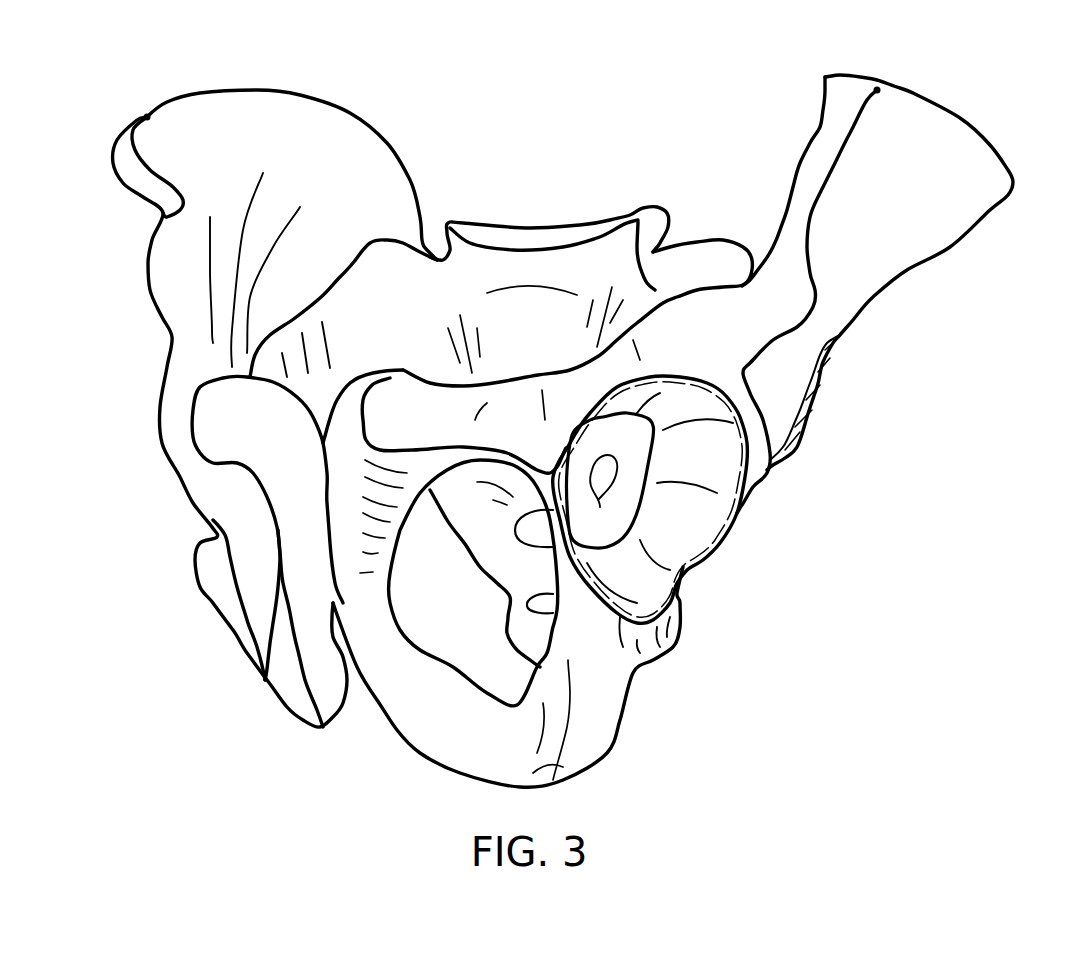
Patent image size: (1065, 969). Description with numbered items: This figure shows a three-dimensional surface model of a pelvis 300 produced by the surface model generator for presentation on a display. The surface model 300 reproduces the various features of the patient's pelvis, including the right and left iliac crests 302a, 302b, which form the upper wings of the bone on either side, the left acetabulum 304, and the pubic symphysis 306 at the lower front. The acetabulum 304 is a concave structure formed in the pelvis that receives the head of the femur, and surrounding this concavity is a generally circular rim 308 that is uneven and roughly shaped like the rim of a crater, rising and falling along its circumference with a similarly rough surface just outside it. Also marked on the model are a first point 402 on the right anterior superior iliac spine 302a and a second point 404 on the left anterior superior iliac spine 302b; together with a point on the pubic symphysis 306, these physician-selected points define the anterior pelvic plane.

The 3-D surface model of a pelvis 300 is at (360, 108).
The right iliac crest 302a is at (925, 104).
The left iliac crest 302b is at (208, 91).
The left acetabulum 304 is at (697, 537).
The pubic symphysis 306 is at (348, 397).
The rim 308 is at (677, 380).
The first point 402 is at (147, 113).
The second point 404 is at (877, 86).